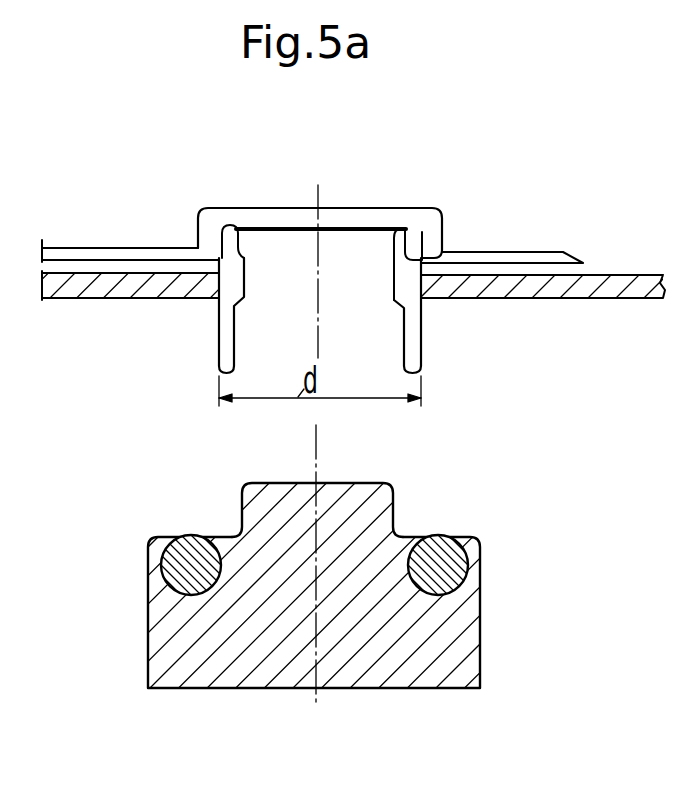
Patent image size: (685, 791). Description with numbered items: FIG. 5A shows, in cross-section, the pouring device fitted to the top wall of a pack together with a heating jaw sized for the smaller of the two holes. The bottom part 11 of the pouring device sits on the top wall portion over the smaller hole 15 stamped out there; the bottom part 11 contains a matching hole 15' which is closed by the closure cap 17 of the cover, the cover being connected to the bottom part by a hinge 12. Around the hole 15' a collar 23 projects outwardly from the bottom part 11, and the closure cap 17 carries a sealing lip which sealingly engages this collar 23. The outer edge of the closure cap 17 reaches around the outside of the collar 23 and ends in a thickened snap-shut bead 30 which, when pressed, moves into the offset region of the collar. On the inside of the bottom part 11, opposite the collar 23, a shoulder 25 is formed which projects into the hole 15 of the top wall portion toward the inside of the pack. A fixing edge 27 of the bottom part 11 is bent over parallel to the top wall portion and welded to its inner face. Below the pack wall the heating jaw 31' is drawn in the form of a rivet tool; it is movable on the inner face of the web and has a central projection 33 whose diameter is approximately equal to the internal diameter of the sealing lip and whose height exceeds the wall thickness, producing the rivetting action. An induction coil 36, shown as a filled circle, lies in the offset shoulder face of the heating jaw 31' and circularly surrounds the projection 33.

The bottom part 11 is at (99, 265).
The hinge 12 is at (582, 270).
The smaller hole 15 is at (462, 317).
The hole in bottom part 15' is at (358, 314).
The closure cap 17 is at (363, 218).
The collar 23 is at (233, 228).
The shoulder 25 is at (398, 287).
The fixing edge 27 is at (230, 352).
The snap-shut bead 30 is at (425, 230).
The heating jaw 31' is at (335, 634).
The central projection 33 is at (290, 518).
The induction coil 36 is at (178, 558).